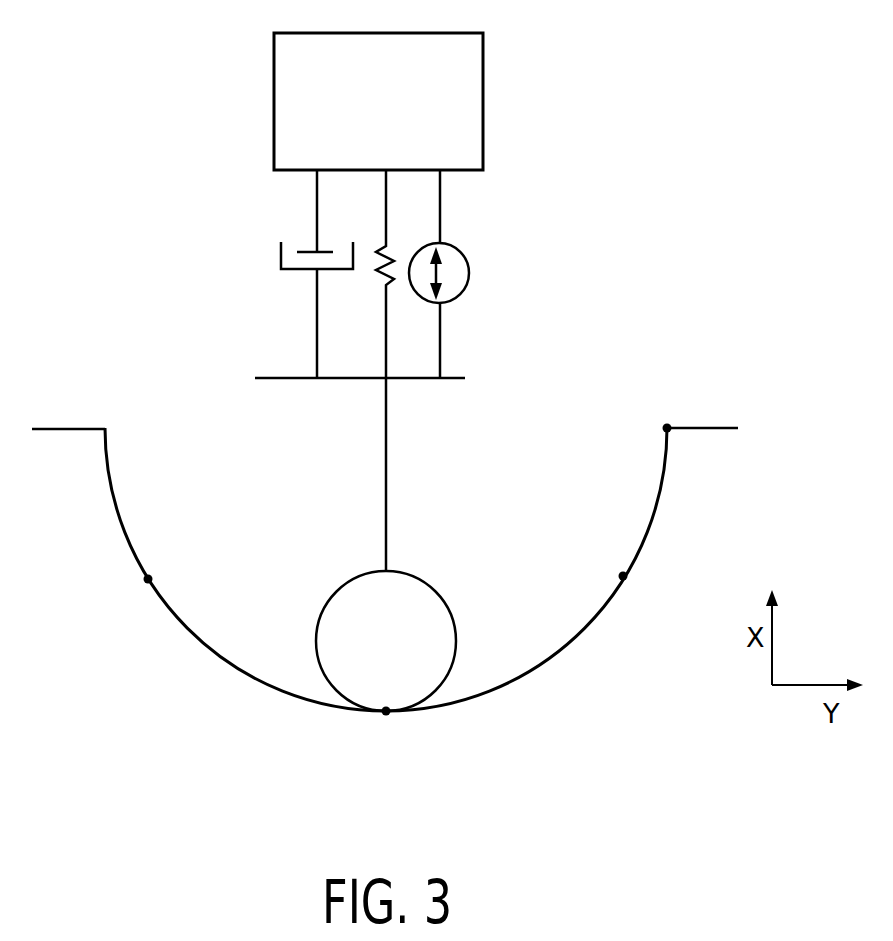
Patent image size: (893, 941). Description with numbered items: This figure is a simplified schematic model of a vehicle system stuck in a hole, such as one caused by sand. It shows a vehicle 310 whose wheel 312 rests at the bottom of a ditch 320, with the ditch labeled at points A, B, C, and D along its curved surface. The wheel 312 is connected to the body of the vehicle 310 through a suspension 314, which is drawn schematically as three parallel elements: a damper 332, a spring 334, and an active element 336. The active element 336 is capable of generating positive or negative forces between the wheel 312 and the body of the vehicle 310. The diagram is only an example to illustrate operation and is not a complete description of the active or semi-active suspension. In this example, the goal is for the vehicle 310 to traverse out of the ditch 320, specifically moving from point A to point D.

The vehicle 310 is at (396, 118).
The wheel 312 is at (404, 656).
The suspension 314 is at (411, 370).
The ditch 320 is at (608, 413).
The damper 332 is at (317, 343).
The spring 334 is at (386, 218).
The active element 336 is at (440, 343).